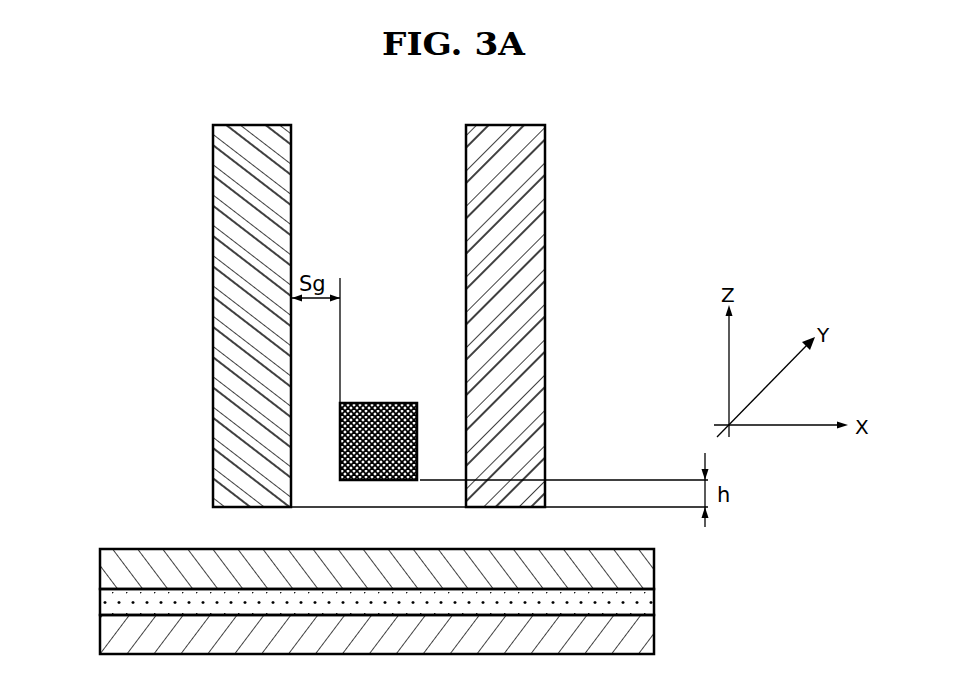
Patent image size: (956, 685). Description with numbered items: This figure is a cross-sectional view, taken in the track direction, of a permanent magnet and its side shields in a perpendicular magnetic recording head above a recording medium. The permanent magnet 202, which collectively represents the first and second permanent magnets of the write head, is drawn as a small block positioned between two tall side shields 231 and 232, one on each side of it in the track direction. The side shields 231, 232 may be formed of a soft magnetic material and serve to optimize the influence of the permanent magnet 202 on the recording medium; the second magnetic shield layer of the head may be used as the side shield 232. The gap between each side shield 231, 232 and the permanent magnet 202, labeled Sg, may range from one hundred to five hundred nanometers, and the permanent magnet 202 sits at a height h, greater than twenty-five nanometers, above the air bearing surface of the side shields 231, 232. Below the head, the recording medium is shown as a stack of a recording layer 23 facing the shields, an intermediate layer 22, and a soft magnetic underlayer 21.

The side shield 231 is at (213, 400).
The side shield 232 is at (545, 407).
The permanent magnet 202 is at (340, 448).
The recording layer 23 is at (105, 570).
The intermediate layer 22 is at (105, 603).
The soft magnetic underlayer 21 is at (105, 635).